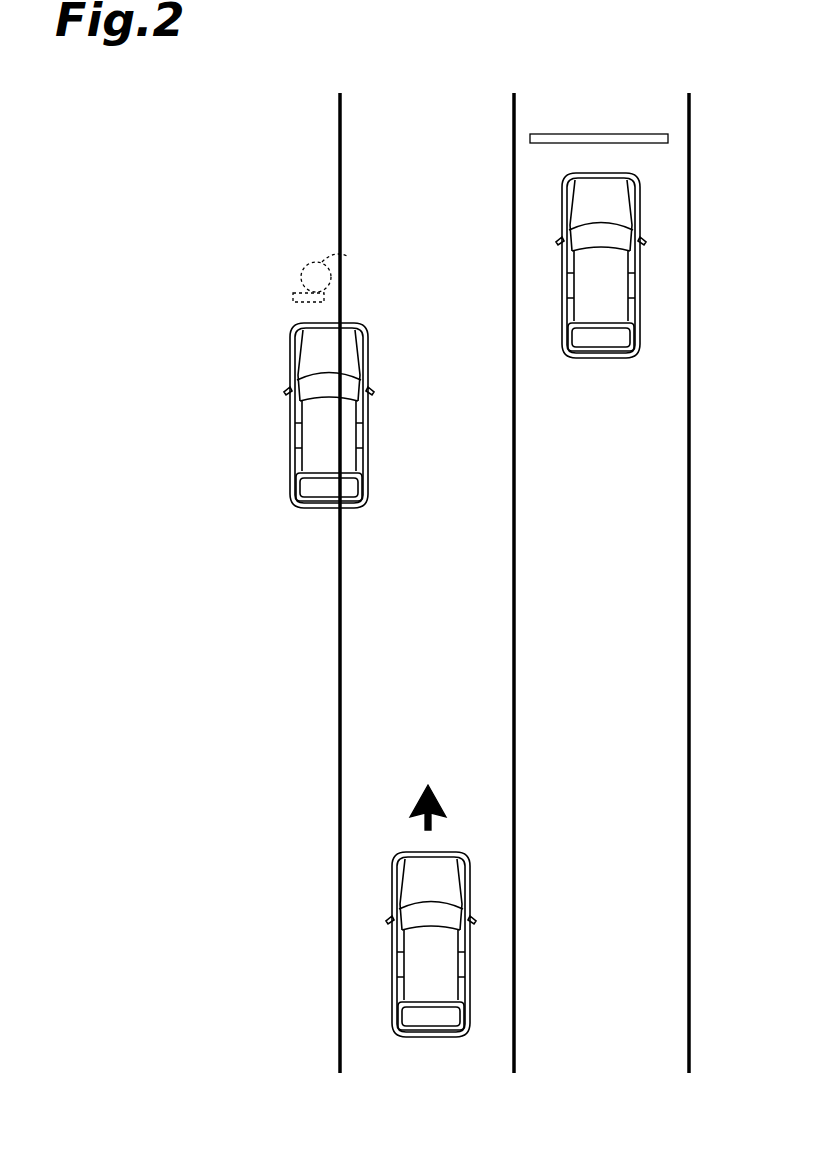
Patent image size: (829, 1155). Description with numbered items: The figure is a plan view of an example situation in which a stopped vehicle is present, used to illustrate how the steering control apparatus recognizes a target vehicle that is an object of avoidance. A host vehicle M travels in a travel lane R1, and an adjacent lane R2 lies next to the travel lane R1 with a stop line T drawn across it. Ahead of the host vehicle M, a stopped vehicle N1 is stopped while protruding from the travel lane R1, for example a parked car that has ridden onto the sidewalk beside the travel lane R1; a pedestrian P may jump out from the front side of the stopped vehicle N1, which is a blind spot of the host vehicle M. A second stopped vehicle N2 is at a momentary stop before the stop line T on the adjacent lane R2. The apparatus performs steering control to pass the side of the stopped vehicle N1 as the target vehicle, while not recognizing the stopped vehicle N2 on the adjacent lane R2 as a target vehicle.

The travel lane R1 is at (342, 1092).
The adjacent lane R2 is at (521, 1092).
The stop line T is at (638, 134).
The pedestrian P is at (306, 262).
The stopped vehicle N1 is at (296, 378).
The stopped vehicle N2 is at (636, 273).
The host vehicle M is at (393, 960).